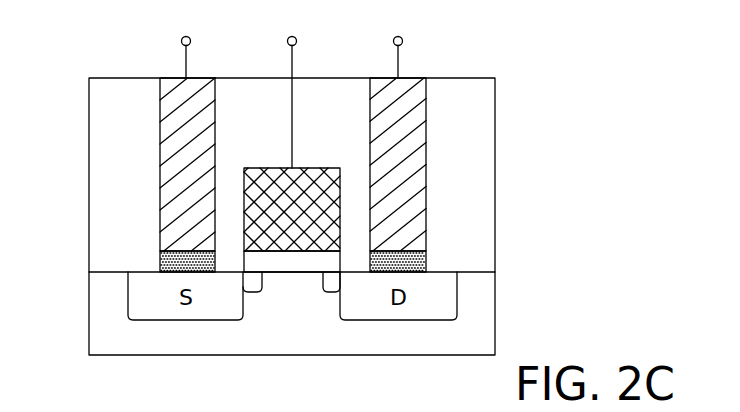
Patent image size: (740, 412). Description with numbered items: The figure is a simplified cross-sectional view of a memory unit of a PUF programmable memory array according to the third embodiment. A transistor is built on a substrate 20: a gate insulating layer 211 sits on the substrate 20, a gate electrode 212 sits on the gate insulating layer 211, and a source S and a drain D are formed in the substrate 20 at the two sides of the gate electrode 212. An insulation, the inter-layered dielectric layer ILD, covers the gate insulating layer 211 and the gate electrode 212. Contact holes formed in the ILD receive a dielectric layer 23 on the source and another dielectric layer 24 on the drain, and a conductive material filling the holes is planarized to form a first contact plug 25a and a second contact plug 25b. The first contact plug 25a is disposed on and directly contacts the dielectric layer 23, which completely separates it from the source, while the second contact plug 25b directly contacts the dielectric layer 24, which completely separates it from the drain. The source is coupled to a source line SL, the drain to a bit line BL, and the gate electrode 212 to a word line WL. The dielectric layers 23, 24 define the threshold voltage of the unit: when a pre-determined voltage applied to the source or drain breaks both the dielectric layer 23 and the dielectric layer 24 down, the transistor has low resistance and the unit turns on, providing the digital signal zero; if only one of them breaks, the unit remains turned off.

The substrate 20 is at (102, 317).
The dielectric layer 23 is at (160, 257).
The dielectric layer 24 is at (427, 259).
The first contact plug 25a is at (167, 123).
The second contact plug 25b is at (420, 104).
The gate insulating layer 211 is at (283, 262).
The gate electrode 212 is at (308, 248).
The inter-layered dielectric layer ILD is at (108, 159).
The source line SL is at (186, 44).
The word line WL is at (296, 89).
The bit line BL is at (399, 44).